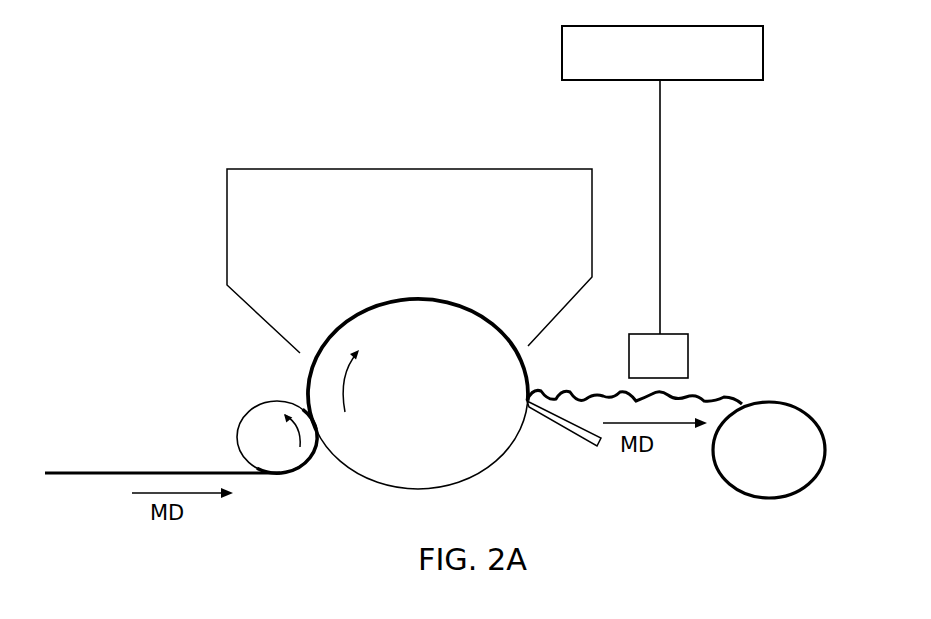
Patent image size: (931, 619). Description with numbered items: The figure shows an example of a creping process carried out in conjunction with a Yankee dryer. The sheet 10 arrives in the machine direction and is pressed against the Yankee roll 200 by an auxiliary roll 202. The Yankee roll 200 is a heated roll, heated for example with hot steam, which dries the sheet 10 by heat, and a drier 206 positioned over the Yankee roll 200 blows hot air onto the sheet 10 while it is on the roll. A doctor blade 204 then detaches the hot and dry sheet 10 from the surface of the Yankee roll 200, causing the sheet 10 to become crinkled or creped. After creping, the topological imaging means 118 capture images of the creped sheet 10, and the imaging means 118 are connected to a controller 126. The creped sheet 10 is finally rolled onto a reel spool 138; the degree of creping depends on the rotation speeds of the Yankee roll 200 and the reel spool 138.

The sheet 10 is at (77, 471).
The topological imaging means 118 is at (678, 332).
The controller 126 is at (562, 49).
The reel spool 138 is at (718, 477).
The Yankee roll 200 is at (438, 409).
The auxiliary roll 202 is at (257, 402).
The doctor blade 204 is at (567, 432).
The drier 206 is at (502, 167).